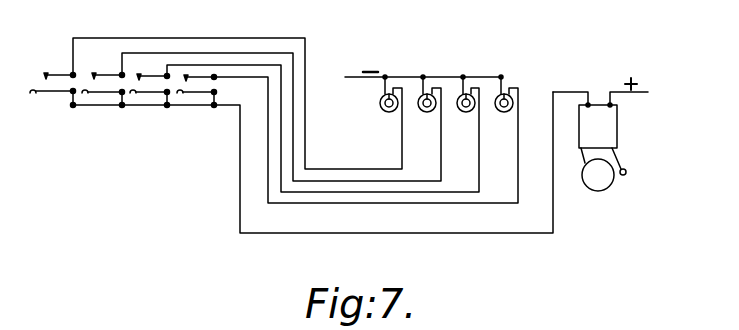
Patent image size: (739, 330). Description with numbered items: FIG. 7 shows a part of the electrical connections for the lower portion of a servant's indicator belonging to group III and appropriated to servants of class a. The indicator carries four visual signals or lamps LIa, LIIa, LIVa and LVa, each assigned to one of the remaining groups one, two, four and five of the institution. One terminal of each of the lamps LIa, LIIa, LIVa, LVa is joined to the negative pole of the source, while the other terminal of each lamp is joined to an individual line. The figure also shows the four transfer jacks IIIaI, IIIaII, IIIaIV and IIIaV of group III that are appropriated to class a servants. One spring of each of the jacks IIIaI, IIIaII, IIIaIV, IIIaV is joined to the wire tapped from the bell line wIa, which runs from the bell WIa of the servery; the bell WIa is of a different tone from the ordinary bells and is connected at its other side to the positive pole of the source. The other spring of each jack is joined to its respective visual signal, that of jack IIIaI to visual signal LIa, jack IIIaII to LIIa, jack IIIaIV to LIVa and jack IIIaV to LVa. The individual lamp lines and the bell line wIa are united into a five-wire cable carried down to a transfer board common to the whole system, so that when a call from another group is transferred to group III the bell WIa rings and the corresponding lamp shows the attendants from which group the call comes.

The transfer jack IIIaI is at (48, 98).
The transfer jack IIIaII is at (121, 109).
The transfer jack IIIaIV is at (158, 109).
The transfer jack IIIaV is at (212, 110).
The visual signal LIa is at (377, 103).
The visual signal LIIa is at (423, 105).
The visual signal LIVa is at (465, 105).
The visual signal LVa is at (500, 105).
The bell WIa is at (607, 134).
The bell line wIa is at (424, 237).